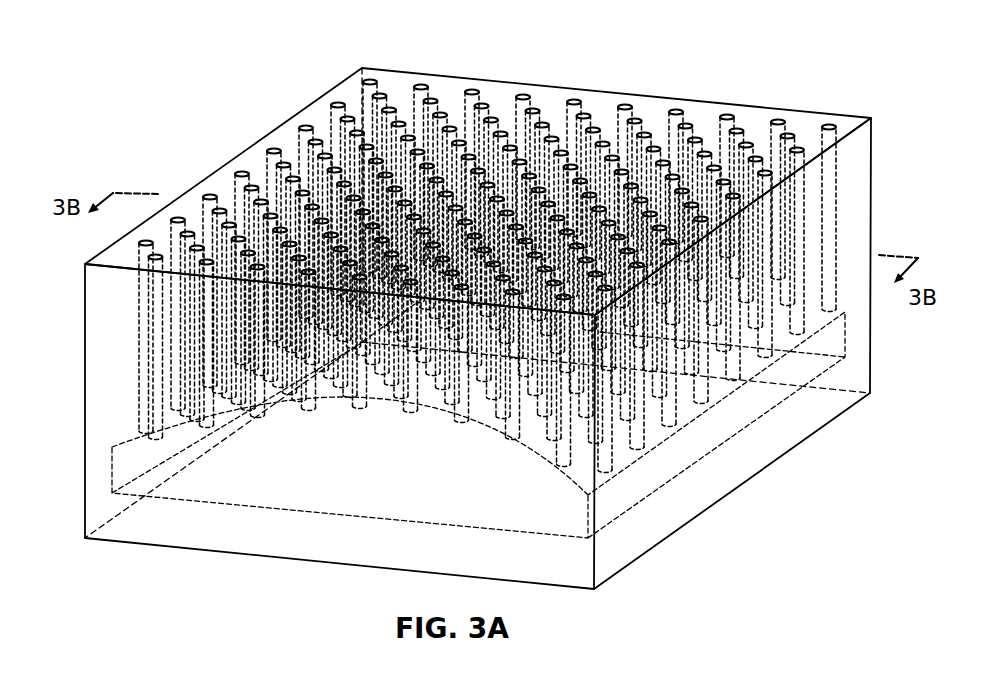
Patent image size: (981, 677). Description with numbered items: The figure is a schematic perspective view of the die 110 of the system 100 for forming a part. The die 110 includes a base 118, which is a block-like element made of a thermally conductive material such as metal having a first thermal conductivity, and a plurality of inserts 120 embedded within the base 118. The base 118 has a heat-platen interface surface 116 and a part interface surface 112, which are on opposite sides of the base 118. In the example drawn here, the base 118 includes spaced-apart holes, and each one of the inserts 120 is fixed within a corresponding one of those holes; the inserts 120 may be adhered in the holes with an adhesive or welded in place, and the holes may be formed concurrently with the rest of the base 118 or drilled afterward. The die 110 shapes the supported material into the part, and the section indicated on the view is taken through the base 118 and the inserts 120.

The system 100 is at (626, 60).
The die 110 is at (77, 389).
The part interface surface 112 is at (113, 462).
The heat-platen interface surface 116 is at (220, 182).
The base 118 is at (108, 315).
The inserts 120 is at (727, 116).